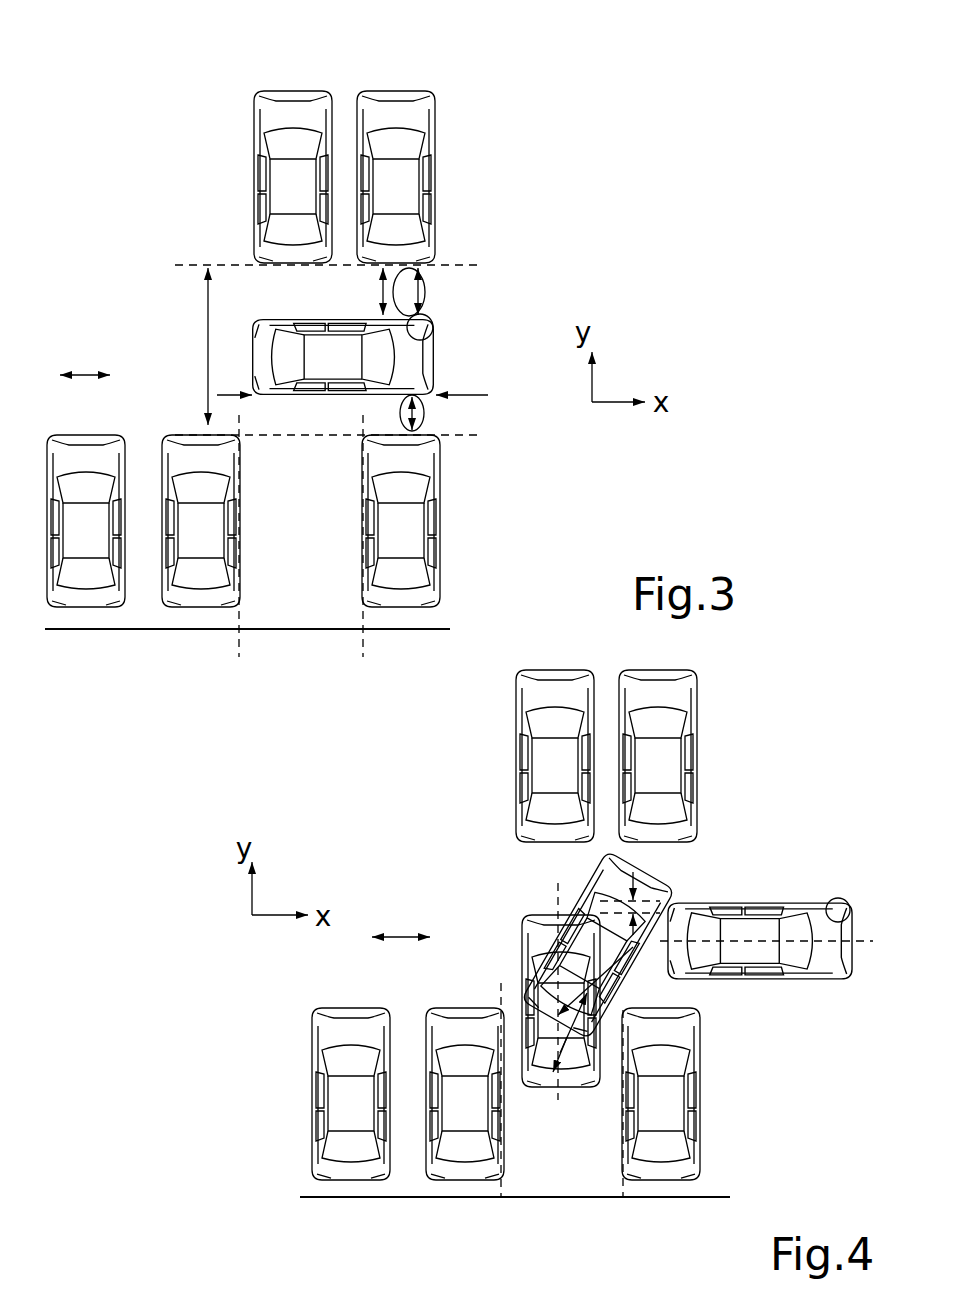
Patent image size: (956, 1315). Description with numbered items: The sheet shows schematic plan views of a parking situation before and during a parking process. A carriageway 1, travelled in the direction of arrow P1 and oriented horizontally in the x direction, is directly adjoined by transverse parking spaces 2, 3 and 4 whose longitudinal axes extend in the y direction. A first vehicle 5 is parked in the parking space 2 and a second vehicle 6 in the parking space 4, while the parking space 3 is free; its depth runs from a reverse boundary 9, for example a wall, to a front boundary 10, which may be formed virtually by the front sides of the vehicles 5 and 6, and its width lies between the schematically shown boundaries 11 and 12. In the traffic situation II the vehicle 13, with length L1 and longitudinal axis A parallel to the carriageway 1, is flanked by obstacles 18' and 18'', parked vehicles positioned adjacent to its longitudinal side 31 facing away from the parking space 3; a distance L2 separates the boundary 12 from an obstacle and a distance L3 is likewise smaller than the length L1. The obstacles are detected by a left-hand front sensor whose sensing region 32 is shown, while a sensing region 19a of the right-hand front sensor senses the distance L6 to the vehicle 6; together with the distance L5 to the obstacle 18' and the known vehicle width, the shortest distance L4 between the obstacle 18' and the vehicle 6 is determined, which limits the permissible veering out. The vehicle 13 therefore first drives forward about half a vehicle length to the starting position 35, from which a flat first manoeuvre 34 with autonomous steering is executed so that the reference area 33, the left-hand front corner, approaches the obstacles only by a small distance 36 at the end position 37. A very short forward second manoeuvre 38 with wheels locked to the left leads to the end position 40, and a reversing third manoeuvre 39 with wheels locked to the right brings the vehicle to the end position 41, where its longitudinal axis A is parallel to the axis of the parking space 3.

In FIG. 3, the carriageway 1 is at (92, 333).
In FIG. 4, the carriageway 1 is at (410, 896).
In FIG. 3, the transverse parking space 2 is at (100, 630).
In FIG. 4, the transverse parking space 2 is at (483, 1190).
In FIG. 3, the transverse parking space 3 is at (310, 618).
In FIG. 4, the transverse parking space 3 is at (578, 1182).
In FIG. 3, the transverse parking space 4 is at (427, 618).
In FIG. 4, the transverse parking space 4 is at (700, 1190).
In FIG. 3, the first vehicle 5 is at (181, 605).
In FIG. 4, the first vehicle 5 is at (445, 1176).
In FIG. 3, the second vehicle 6 is at (440, 484).
In FIG. 4, the second vehicle 6 is at (700, 1150).
In FIG. 3, the reverse boundary 9 is at (268, 632).
In FIG. 4, the reverse boundary 9 is at (537, 1198).
In FIG. 3, the front boundary 10 is at (316, 440).
In FIG. 3, the boundary 11 is at (238, 640).
In FIG. 4, the boundary 11 is at (500, 1003).
In FIG. 3, the boundary 12 is at (364, 640).
In FIG. 4, the boundary 12 is at (622, 1165).
In FIG. 3, the vehicle 13 is at (243, 338).
In FIG. 3, the obstacle 18' is at (396, 133).
In FIG. 3, the obstacle 18'' is at (293, 133).
In FIG. 3, the sensing region 19a is at (426, 412).
In FIG. 3, the longitudinal side 31 is at (300, 322).
In FIG. 3, the sensing region 32 is at (425, 292).
In FIG. 3, the reference area 33 is at (434, 331).
In FIG. 4, the reference area 33 is at (848, 903).
In FIG. 4, the first manoeuvre 34 is at (640, 948).
In FIG. 4, the starting position 35 is at (720, 905).
In FIG. 4, the distance 36 is at (636, 876).
In FIG. 4, the end position 37 is at (590, 990).
In FIG. 4, the second manoeuvre 38 is at (585, 990).
In FIG. 4, the third manoeuvre 39 is at (560, 1050).
In FIG. 4, the end position 40 is at (614, 872).
In FIG. 4, the end position 41 is at (532, 1075).
In FIG. 4, the longitudinal axis A is at (557, 885).
In FIG. 3, the traffic situation II is at (567, 275).
In FIG. 3, the length L1 is at (488, 395).
In FIG. 3, the distance L2 is at (367, 703).
In FIG. 3, the distance L3 is at (376, 297).
In FIG. 3, the distance L4 is at (207, 303).
In FIG. 3, the distance L5 is at (467, 265).
In FIG. 3, the distance L6 is at (420, 432).
In FIG. 3, the arrow P1 is at (82, 372).
In FIG. 4, the arrow P1 is at (400, 937).